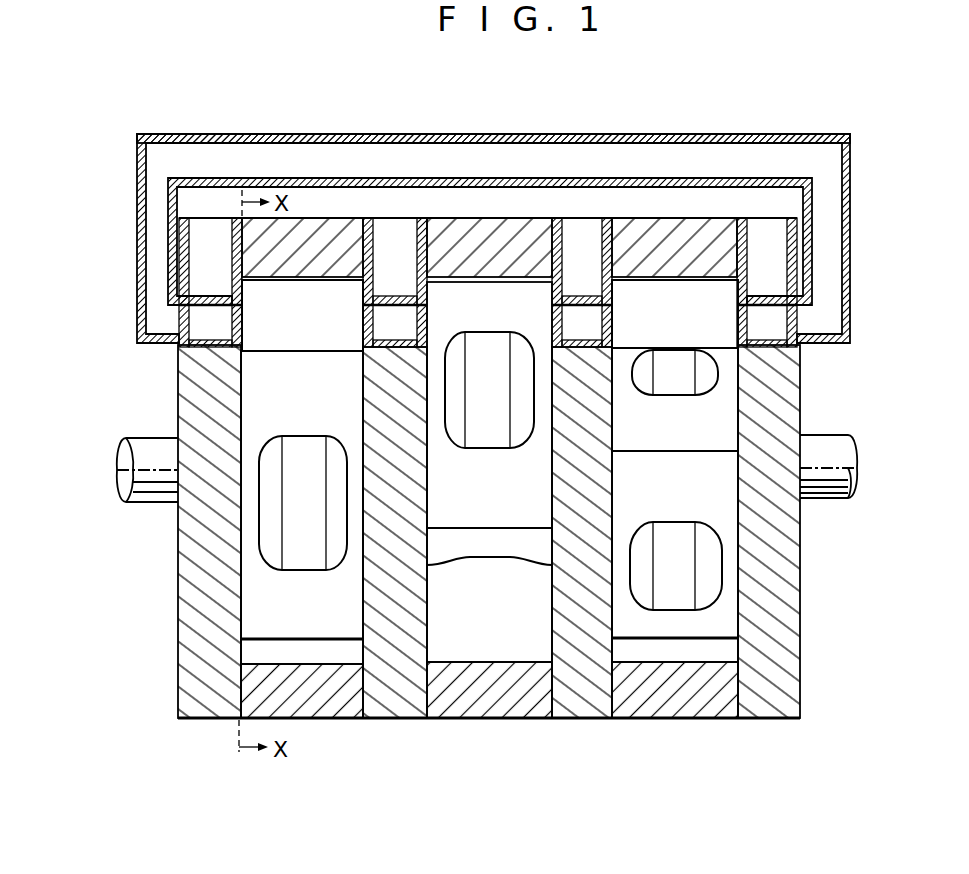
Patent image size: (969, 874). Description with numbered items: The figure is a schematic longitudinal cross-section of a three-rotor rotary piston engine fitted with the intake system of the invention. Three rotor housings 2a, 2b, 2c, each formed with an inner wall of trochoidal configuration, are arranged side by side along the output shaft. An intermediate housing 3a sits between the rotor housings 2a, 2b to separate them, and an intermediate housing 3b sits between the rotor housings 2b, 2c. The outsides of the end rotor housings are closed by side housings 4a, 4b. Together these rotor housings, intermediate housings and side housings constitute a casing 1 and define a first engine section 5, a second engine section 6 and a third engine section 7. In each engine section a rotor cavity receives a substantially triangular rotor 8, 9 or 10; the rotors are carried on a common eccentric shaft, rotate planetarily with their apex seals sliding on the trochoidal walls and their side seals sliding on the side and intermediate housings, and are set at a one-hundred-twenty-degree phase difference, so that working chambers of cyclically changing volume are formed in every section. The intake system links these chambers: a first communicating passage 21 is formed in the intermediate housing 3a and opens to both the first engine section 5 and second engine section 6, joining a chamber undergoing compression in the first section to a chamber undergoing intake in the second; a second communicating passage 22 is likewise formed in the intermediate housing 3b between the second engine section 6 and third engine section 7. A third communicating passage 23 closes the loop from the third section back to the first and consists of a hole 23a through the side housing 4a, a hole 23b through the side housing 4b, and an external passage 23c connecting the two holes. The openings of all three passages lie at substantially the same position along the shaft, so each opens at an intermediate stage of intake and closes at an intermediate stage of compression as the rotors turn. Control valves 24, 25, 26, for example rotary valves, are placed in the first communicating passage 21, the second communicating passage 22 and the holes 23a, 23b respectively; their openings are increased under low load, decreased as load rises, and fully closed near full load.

The casing 1 is at (198, 731).
The rotor housing 2a is at (345, 705).
The rotor housing 2b is at (527, 703).
The rotor housing 2c is at (668, 703).
The intermediate housing 3a is at (410, 703).
The intermediate housing 3b is at (593, 705).
The side housing 4a is at (190, 663).
The side housing 4b is at (780, 618).
The first engine section 5 is at (323, 726).
The second engine section 6 is at (482, 726).
The third engine section 7 is at (718, 731).
The rotor 8 is at (250, 586).
The rotor 9 is at (507, 560).
The rotor 10 is at (713, 510).
The first communicating passage 21 is at (365, 318).
The second communicating passage 22 is at (615, 320).
The third communicating passage 23 is at (730, 114).
The hole 23a is at (243, 322).
The hole 23b is at (737, 316).
The passage 23c is at (612, 135).
The control valve 24 is at (402, 290).
The control valve 25 is at (588, 288).
The control valve 26 is at (210, 290).